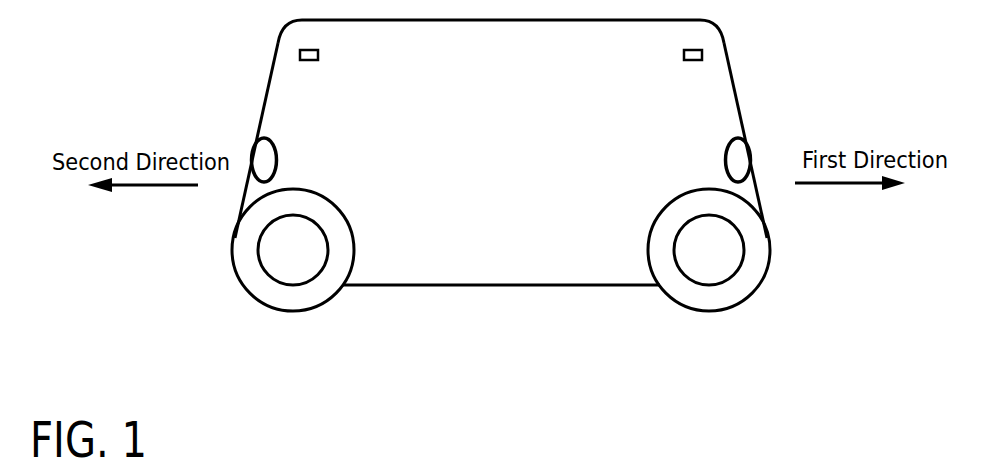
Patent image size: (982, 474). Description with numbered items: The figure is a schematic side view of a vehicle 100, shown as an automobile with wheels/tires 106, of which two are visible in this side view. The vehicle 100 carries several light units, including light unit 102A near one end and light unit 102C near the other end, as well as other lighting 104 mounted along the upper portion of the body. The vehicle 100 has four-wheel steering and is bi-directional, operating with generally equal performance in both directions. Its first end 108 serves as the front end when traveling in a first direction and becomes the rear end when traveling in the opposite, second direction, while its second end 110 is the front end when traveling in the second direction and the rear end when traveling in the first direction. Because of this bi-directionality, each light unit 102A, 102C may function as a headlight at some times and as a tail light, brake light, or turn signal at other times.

The vehicle 100 is at (522, 95).
The light unit 102A is at (742, 138).
The light unit 102C is at (260, 138).
The other lighting 104 is at (302, 50).
The wheels/tires 106 is at (767, 263).
The first end 108 is at (763, 202).
The second end 110 is at (240, 203).